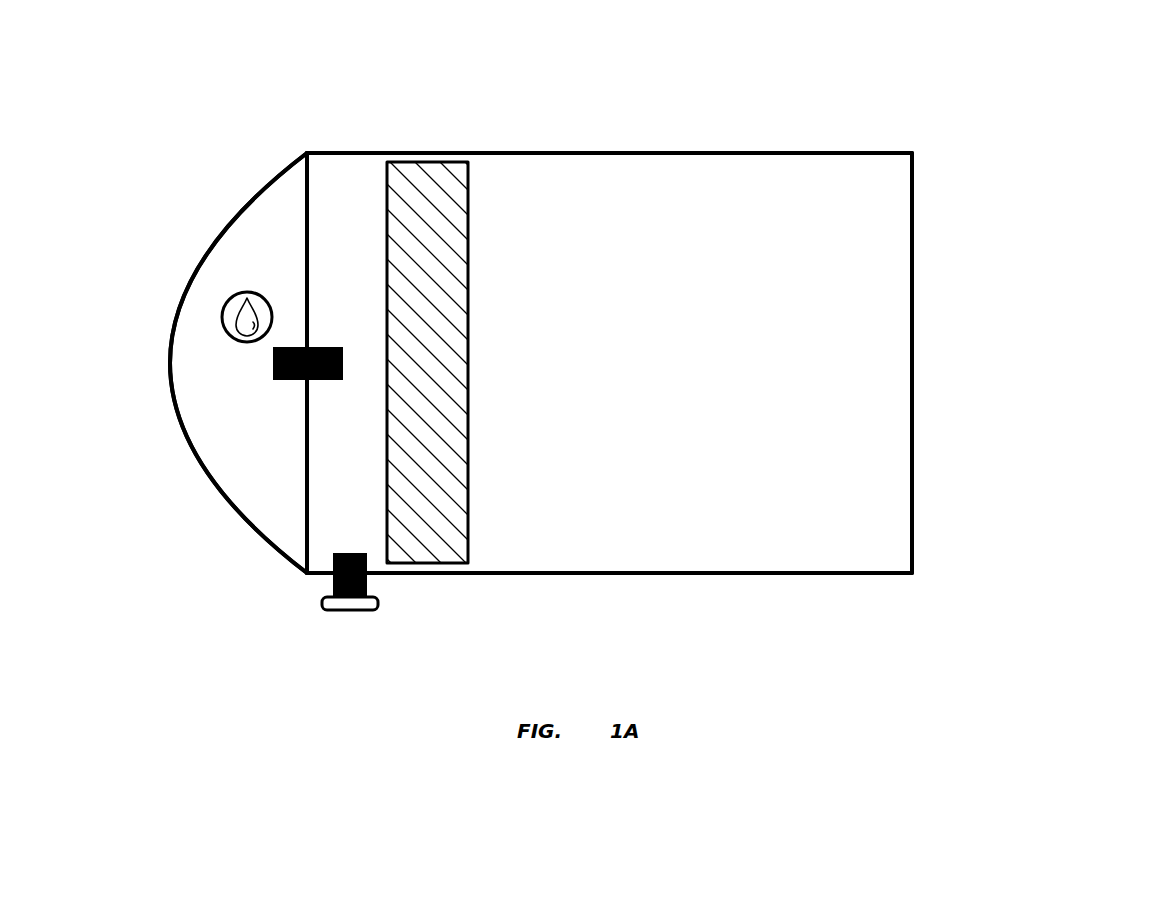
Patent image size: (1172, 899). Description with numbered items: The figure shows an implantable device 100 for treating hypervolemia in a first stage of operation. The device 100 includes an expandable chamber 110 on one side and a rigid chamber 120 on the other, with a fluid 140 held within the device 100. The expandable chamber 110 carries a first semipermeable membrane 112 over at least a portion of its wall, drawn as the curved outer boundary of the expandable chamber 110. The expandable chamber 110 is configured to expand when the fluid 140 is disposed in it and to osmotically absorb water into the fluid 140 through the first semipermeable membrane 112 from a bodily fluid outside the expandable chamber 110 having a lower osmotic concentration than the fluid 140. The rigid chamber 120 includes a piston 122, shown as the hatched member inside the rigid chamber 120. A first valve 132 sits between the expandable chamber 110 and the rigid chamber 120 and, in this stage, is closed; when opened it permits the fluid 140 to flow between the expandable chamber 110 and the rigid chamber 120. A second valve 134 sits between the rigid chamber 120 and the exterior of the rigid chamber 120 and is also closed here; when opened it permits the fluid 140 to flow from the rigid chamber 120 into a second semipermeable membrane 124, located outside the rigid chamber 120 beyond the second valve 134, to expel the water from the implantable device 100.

The implantable device 100 is at (993, 106).
The expandable chamber 110 is at (215, 373).
The first semipermeable membrane 112 is at (243, 213).
The rigid chamber 120 is at (843, 213).
The piston 122 is at (425, 523).
The second semipermeable membrane 124 is at (352, 610).
The first valve 132 is at (292, 372).
The second valve 134 is at (352, 582).
The fluid 140 is at (222, 316).